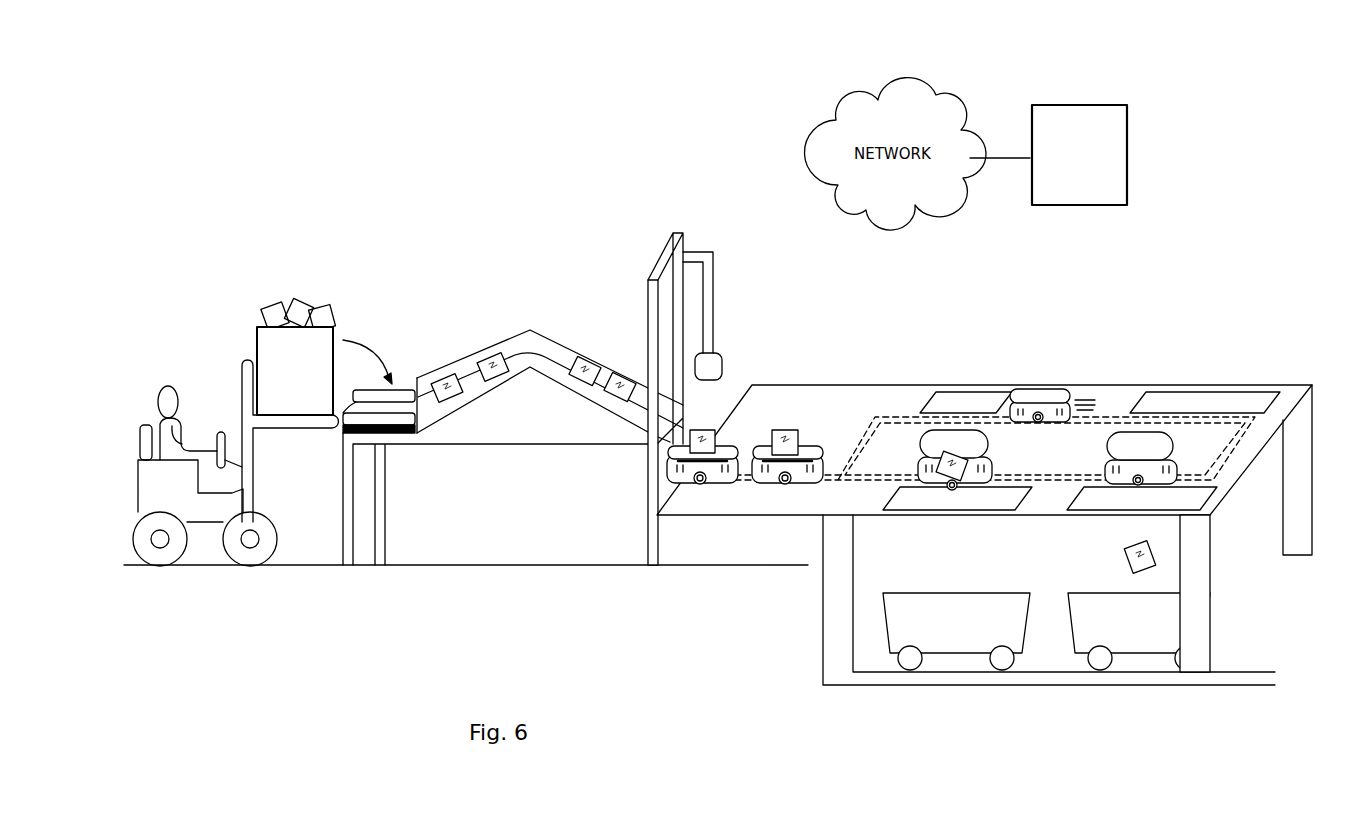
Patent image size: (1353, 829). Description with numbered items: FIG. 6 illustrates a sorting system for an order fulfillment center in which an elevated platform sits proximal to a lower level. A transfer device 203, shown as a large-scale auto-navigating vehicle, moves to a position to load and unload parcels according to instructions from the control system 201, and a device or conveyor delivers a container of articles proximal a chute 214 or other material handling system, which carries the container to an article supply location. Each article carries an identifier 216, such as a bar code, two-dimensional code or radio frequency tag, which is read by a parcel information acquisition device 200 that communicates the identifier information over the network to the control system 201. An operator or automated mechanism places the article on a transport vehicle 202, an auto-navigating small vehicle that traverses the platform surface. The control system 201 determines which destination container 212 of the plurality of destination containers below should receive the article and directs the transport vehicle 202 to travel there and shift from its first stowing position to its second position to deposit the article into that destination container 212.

The parcel information acquisition device 200 is at (727, 340).
The control system 201 is at (1048, 155).
The transport vehicle 202 is at (767, 500).
The transfer device 203 is at (208, 522).
The destination container 212 is at (955, 642).
The chute 214 is at (527, 338).
The identifier 216 is at (447, 378).